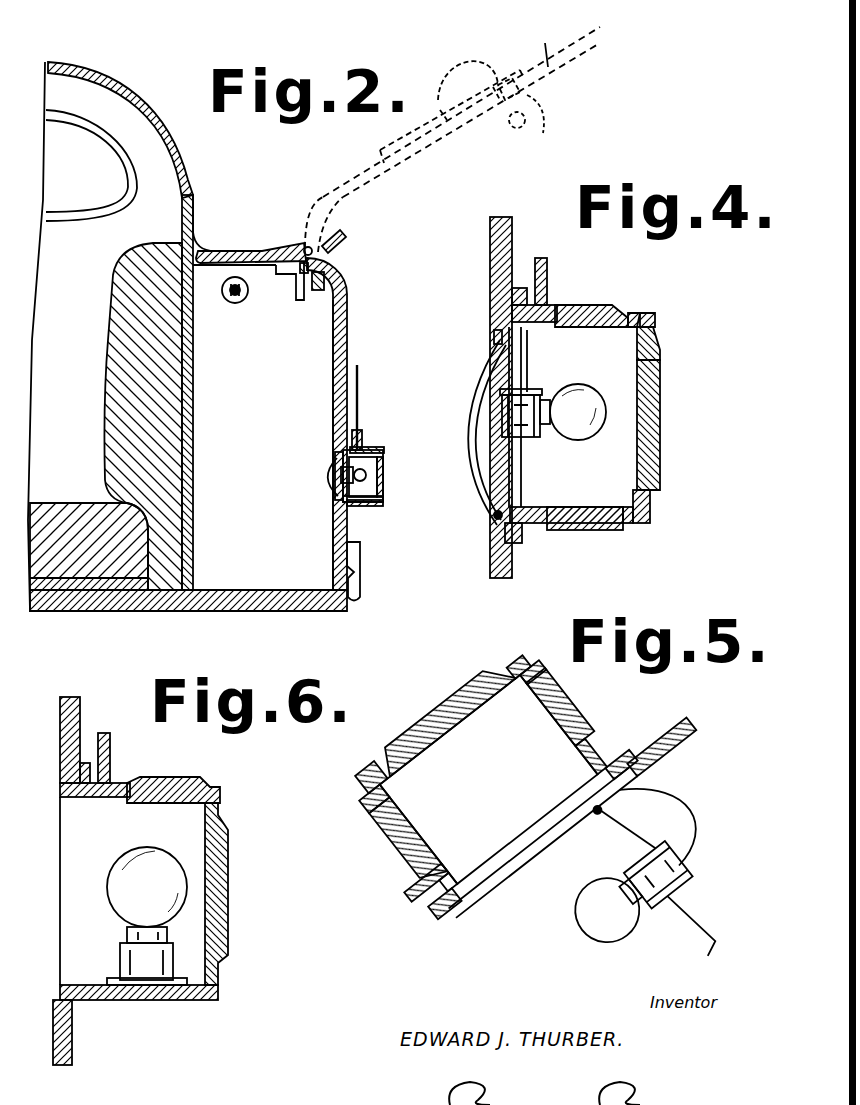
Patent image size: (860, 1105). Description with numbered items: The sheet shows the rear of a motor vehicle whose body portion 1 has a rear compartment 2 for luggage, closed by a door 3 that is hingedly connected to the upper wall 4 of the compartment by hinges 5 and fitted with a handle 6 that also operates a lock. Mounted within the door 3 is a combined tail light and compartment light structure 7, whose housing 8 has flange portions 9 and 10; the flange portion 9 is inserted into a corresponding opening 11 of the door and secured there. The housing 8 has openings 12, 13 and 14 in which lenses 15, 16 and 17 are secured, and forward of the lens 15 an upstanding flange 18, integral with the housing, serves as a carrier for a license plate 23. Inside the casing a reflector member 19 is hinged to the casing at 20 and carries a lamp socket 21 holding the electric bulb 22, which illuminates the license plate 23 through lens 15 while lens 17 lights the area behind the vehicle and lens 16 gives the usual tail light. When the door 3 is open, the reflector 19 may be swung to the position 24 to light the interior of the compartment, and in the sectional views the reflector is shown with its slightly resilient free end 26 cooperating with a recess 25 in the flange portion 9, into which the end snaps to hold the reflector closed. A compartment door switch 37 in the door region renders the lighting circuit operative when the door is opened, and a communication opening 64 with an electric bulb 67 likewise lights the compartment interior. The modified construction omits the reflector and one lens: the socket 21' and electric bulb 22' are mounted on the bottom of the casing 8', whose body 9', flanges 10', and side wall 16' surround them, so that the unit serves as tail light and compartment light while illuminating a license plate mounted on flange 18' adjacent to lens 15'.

In FIG. 2, the body portion 1 is at (192, 203).
In FIG. 2, the rear compartment 2 is at (347, 333).
In FIG. 2, the door 3 is at (323, 350).
In FIG. 4, the door 3 is at (493, 227).
In FIG. 6, the door 3 is at (78, 707).
In FIG. 5, the door 3 is at (680, 737).
In FIG. 2, the upper wall 4 is at (256, 250).
In FIG. 2, the hinges 5 is at (327, 240).
In FIG. 2, the handle 6 is at (358, 573).
In FIG. 2, the combined tail light and compartment light structure 7 is at (478, 62).
In FIG. 4, the combined tail light and compartment light structure 7 is at (657, 313).
In FIG. 5, the combined tail light and compartment light structure 7 is at (512, 667).
In FIG. 2, the housing 8 is at (369, 516).
In FIG. 4, the housing 8 is at (665, 339).
In FIG. 5, the housing 8 is at (595, 742).
In FIG. 4, the flange portion 9 is at (487, 441).
In FIG. 5, the flange portion 9 is at (513, 803).
In FIG. 4, the flange portion 10 is at (530, 395).
In FIG. 5, the flange portion 10 is at (514, 827).
In FIG. 2, the opening 11 is at (513, 293).
In FIG. 5, the opening 11 is at (440, 915).
In FIG. 4, the opening 12 is at (627, 313).
In FIG. 5, the opening 12 is at (380, 797).
In FIG. 4, the opening 13 is at (650, 497).
In FIG. 5, the opening 13 is at (373, 770).
In FIG. 4, the opening 14 is at (632, 523).
In FIG. 5, the opening 14 is at (535, 677).
In FIG. 2, the lens 15 is at (376, 438).
In FIG. 4, the lens 15 is at (570, 298).
In FIG. 5, the lens 15 is at (402, 842).
In FIG. 2, the lens 16 is at (380, 481).
In FIG. 4, the lens 16 is at (673, 425).
In FIG. 5, the lens 16 is at (445, 717).
In FIG. 2, the lens 17 is at (365, 507).
In FIG. 4, the lens 17 is at (587, 523).
In FIG. 5, the lens 17 is at (563, 712).
In FIG. 2, the upstanding flange 18 is at (381, 427).
In FIG. 4, the upstanding flange 18 is at (566, 275).
In FIG. 5, the upstanding flange 18 is at (399, 887).
In FIG. 2, the reflector member 19 is at (337, 460).
In FIG. 4, the reflector member 19 is at (497, 462).
In FIG. 5, the reflector member 19 is at (653, 827).
In FIG. 4, the hinge 20 is at (492, 510).
In FIG. 5, the hinge 20 is at (598, 807).
In FIG. 4, the lamp socket 21 is at (536, 393).
In FIG. 5, the lamp socket 21 is at (679, 874).
In FIG. 2, the electric bulb 22 is at (439, 296).
In FIG. 4, the electric bulb 22 is at (576, 397).
In FIG. 5, the electric bulb 22 is at (599, 909).
In FIG. 2, the license plate 23 is at (360, 387).
In FIG. 2, the swung position of reflector 24 is at (545, 118).
In FIG. 4, the recess 25 is at (510, 328).
In FIG. 5, the recess 25 is at (463, 890).
In FIG. 4, the free end 26 is at (522, 337).
In FIG. 5, the free end 26 is at (699, 938).
In FIG. 2, the compartment door switch 37 is at (300, 300).
In FIG. 2, the communication opening 64 is at (226, 302).
In FIG. 2, the electric bulb 67 is at (246, 296).
In FIG. 6, the casing 8' is at (142, 1014).
In FIG. 6, the housing 9' is at (72, 891).
In FIG. 6, the flange 10' is at (69, 912).
In FIG. 6, the lens 15' is at (175, 778).
In FIG. 6, the housing wall 16' is at (241, 894).
In FIG. 6, the flange 18' is at (130, 758).
In FIG. 6, the socket 21' is at (147, 988).
In FIG. 6, the electric bulb 22' is at (147, 883).